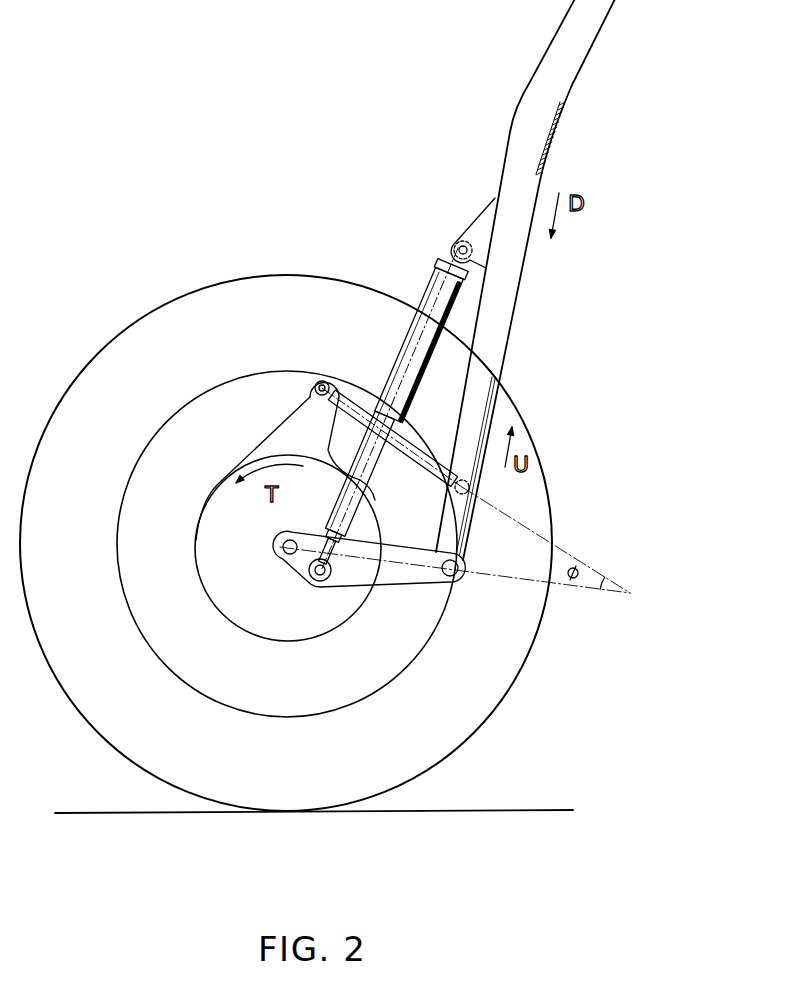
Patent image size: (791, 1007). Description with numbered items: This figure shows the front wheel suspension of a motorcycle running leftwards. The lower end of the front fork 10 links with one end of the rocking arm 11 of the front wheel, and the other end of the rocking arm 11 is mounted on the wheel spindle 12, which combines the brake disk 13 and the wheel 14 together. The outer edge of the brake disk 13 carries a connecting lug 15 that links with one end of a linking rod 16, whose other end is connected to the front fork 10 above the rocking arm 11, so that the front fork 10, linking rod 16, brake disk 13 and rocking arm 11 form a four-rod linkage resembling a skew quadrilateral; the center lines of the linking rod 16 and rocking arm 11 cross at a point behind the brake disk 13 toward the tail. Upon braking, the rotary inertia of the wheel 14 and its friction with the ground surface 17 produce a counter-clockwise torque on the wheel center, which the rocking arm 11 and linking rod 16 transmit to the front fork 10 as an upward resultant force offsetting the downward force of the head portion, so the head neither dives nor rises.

The front fork 10 is at (528, 138).
The rocking arm 11 is at (400, 580).
The wheel spindle 12 is at (280, 560).
The brake disk 13 is at (237, 528).
The wheel 14 is at (110, 377).
The connecting lug 15 is at (307, 388).
The linking rod 16 is at (352, 410).
The ground surface 17 is at (538, 810).